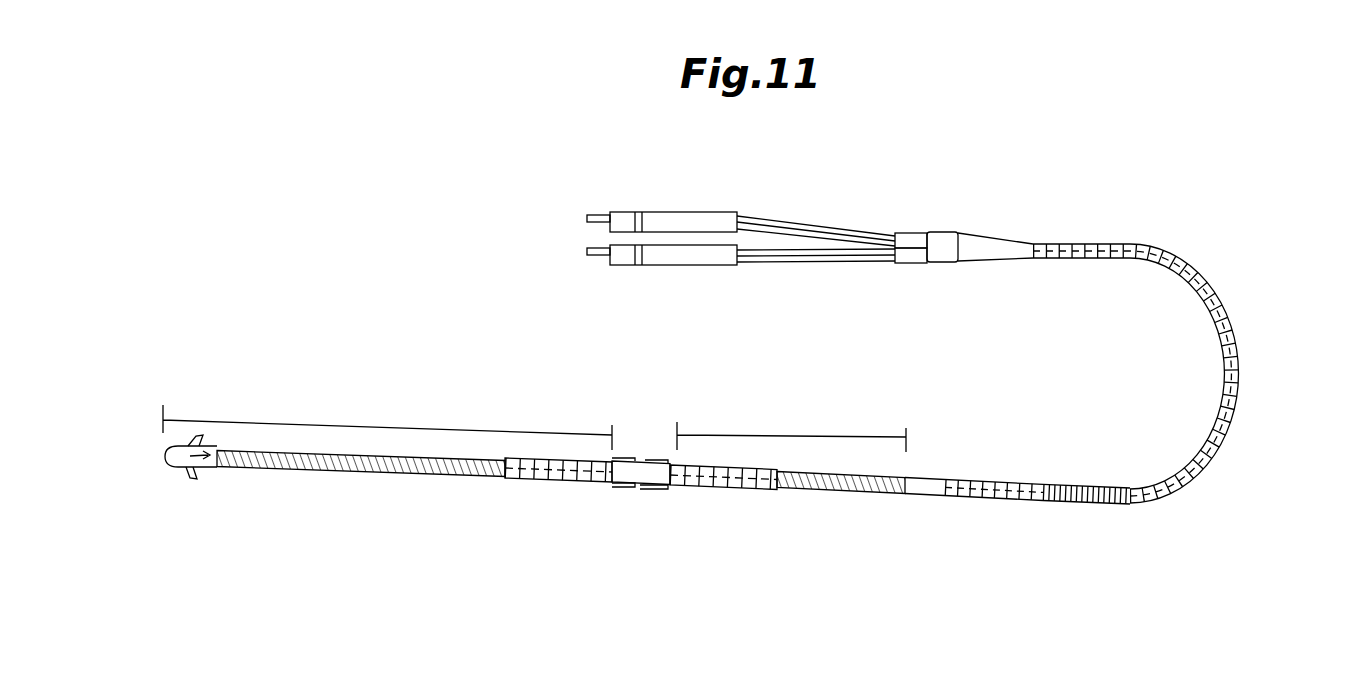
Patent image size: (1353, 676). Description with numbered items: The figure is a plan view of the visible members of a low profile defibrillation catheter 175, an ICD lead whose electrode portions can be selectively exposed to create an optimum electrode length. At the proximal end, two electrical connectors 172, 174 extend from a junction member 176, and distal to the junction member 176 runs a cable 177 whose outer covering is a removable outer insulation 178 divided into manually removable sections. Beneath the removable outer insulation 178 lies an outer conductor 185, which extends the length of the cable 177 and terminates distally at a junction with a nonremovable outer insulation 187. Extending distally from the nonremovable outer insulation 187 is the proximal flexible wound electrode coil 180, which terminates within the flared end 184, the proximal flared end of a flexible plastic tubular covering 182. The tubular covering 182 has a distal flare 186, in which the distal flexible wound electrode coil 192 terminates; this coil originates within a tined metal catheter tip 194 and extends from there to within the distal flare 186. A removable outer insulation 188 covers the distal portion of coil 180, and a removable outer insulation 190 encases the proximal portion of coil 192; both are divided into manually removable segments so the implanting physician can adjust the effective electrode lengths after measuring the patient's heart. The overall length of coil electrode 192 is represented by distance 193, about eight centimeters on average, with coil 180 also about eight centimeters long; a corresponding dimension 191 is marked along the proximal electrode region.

The electrical connector 172 is at (587, 219).
The electrical connector 174 is at (587, 252).
The low profile defibrillation catheter 175 is at (1195, 253).
The junction member 176 is at (950, 245).
The cable 177 is at (1245, 297).
The removable outer insulation 178 is at (1222, 340).
The proximal flexible wound electrode coil 180 is at (868, 490).
The flexible plastic tubular covering 182 is at (637, 460).
The flared end 184 is at (652, 489).
The outer conductor 185 is at (1101, 480).
The distal flare 186 is at (628, 488).
The nonremovable outer insulation 187 is at (928, 480).
The removable outer insulation 188 is at (762, 490).
The removable outer insulation 190 is at (513, 479).
The distal length 191 is at (815, 432).
The distal flexible wound electrode coil 192 is at (435, 478).
The distance 193 is at (390, 425).
The tined metal catheter tip 194 is at (175, 468).